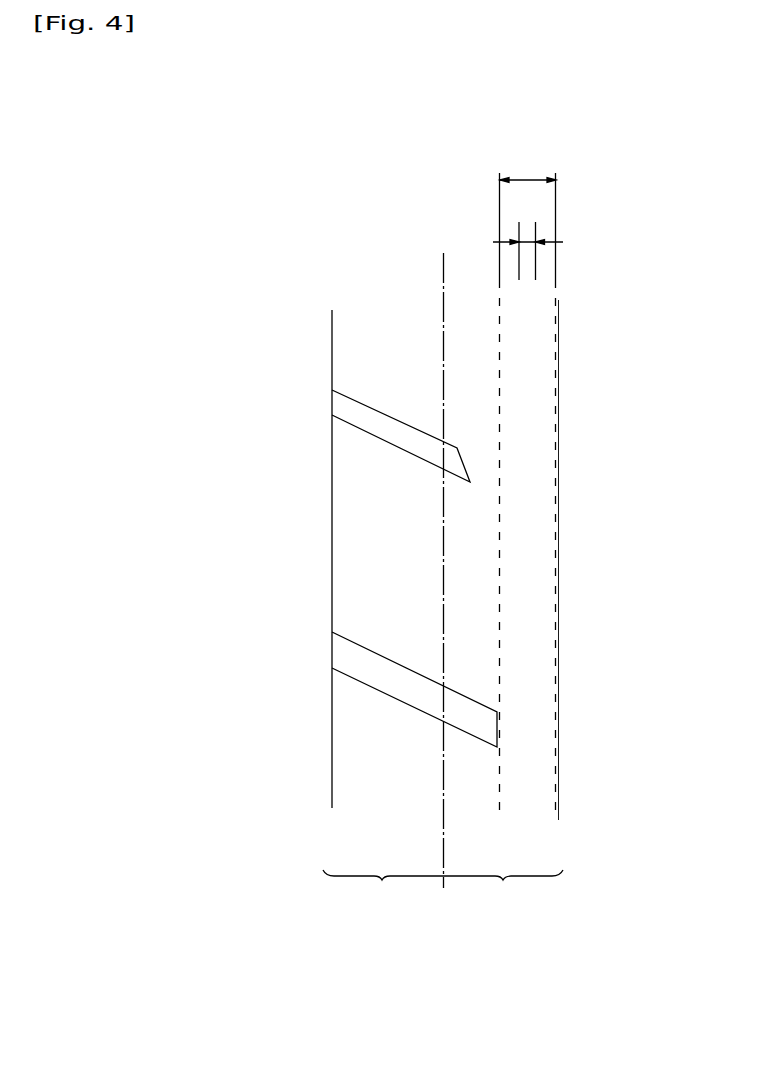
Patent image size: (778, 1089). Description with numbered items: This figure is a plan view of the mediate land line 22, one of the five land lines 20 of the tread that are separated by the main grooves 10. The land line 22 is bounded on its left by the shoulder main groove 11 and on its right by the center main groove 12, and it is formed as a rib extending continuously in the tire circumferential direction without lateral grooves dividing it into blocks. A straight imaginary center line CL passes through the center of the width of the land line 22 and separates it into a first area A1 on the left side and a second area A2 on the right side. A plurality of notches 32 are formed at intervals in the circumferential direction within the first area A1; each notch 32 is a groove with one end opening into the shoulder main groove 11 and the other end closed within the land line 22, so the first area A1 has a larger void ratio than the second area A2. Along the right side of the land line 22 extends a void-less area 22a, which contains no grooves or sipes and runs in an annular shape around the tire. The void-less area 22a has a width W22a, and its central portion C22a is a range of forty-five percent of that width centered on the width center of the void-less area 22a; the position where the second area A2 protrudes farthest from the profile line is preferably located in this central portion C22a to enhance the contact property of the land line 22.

The main grooves 10 is at (447, 496).
The shoulder main groove 11 is at (282, 526).
The center main groove 12 is at (682, 526).
The land lines 20 is at (247, 617).
The mediate land line 22 is at (332, 778).
The void-less area 22a is at (544, 699).
The notches 32 is at (339, 415).
The center line CL is at (442, 594).
The first area A1 is at (383, 893).
The second area A2 is at (503, 893).
The width of the void-less area W22a is at (529, 158).
The central portion C22a is at (558, 244).